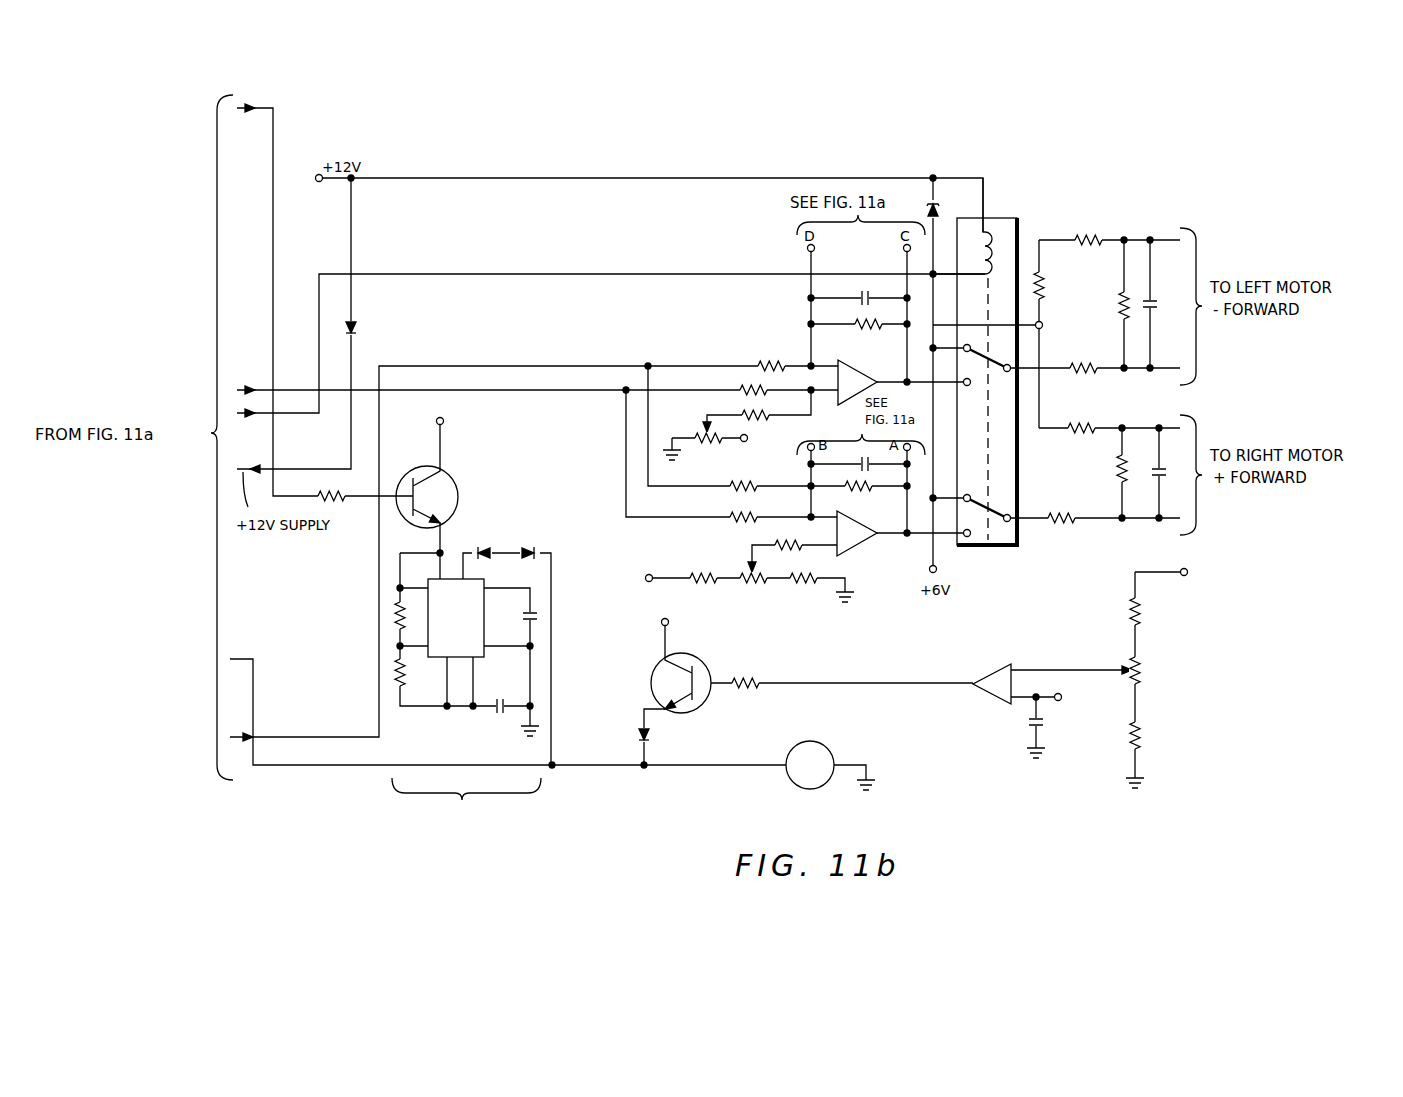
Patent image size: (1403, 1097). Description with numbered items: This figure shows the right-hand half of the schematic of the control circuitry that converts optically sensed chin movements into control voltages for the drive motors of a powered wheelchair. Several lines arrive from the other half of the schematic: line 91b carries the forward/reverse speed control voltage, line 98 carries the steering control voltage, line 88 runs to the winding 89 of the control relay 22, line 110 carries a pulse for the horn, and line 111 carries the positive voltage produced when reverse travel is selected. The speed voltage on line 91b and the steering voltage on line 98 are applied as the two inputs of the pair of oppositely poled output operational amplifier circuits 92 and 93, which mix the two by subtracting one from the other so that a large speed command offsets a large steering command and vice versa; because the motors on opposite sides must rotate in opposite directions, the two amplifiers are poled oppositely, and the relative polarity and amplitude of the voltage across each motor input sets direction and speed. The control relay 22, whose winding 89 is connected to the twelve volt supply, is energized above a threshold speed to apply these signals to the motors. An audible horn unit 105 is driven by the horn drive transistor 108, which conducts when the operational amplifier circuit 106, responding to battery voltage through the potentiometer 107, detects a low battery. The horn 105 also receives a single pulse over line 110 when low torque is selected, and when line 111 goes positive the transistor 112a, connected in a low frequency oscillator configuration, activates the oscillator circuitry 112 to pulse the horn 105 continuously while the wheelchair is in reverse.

The line 111 is at (277, 152).
The line 91b is at (533, 377).
The line 88 is at (263, 418).
The line 110 is at (256, 666).
The line 98 is at (317, 737).
The transistor 112a is at (458, 485).
The oscillator circuitry 112 is at (471, 690).
The operational amplifier circuit 92 is at (790, 342).
The operational amplifier circuit 93 is at (870, 566).
The control relay 22 is at (1000, 216).
The winding 89 is at (995, 240).
The horn drive transistor 108 is at (693, 657).
The horn unit 105 is at (826, 748).
The operational amplifier circuit 106 is at (997, 664).
The potentiometer 107 is at (1138, 668).